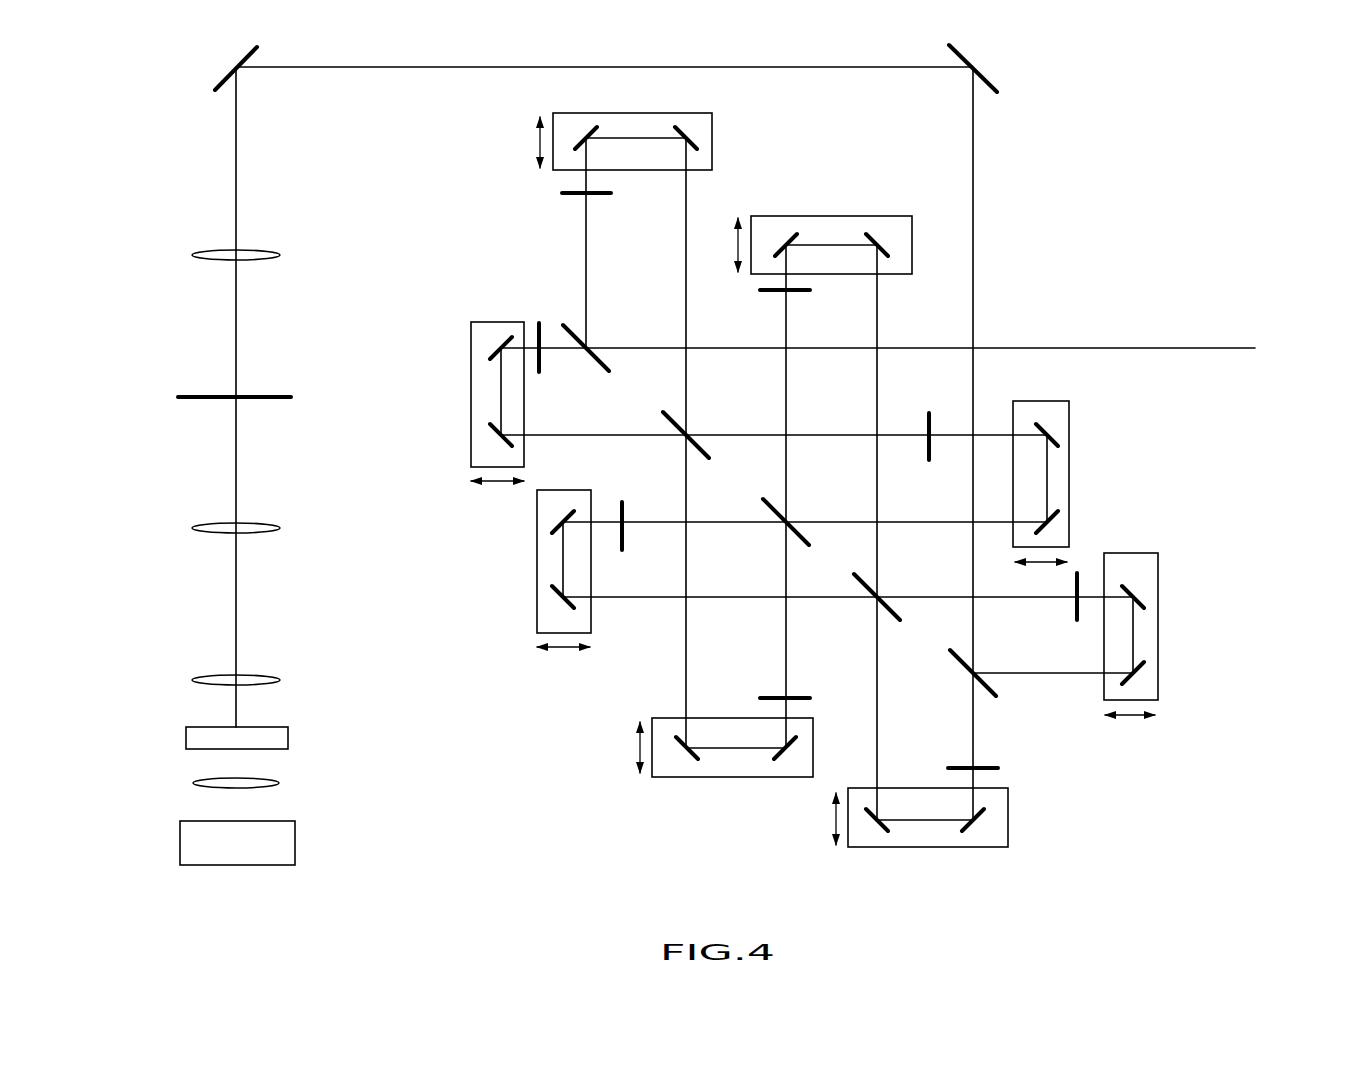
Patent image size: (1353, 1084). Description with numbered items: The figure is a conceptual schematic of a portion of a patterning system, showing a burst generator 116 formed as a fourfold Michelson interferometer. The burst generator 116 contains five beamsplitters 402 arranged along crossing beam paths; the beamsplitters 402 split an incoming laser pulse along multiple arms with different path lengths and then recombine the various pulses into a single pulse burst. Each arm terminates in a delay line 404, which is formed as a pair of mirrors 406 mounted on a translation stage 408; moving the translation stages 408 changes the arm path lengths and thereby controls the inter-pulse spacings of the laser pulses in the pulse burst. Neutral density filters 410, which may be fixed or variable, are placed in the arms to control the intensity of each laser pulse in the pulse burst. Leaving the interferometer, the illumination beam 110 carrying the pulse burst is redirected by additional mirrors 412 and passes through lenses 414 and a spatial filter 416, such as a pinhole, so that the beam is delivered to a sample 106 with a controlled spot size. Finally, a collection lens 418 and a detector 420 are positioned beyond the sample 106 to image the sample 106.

The sample 106 is at (202, 727).
The illumination beam 110 is at (235, 172).
The burst generator 116 is at (1103, 243).
The beamsplitters 402 is at (667, 414).
The delay lines 404 is at (528, 97).
The mirrors 406 is at (675, 132).
The translation stages 408 is at (713, 140).
The neutral density filters 410 is at (575, 195).
The mirrors 412 is at (225, 78).
The lenses 414 is at (202, 252).
The spatial filter 416 is at (200, 393).
The collection lens 418 is at (200, 782).
The detector 420 is at (198, 821).